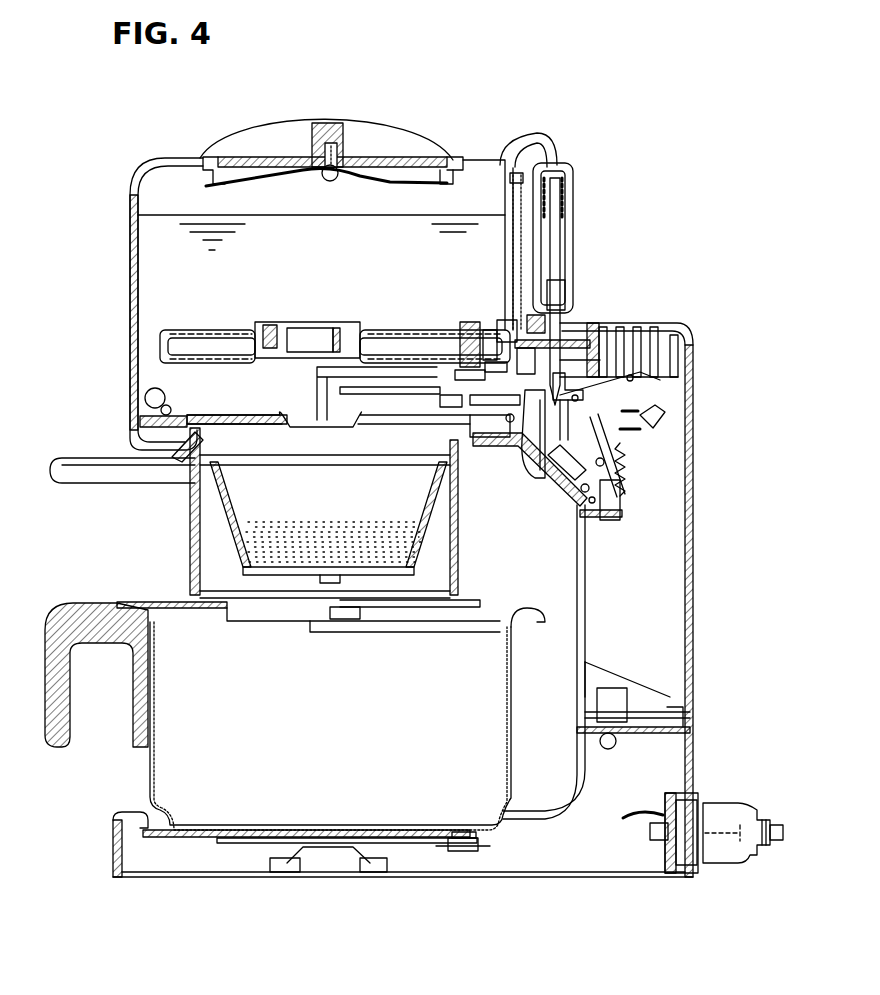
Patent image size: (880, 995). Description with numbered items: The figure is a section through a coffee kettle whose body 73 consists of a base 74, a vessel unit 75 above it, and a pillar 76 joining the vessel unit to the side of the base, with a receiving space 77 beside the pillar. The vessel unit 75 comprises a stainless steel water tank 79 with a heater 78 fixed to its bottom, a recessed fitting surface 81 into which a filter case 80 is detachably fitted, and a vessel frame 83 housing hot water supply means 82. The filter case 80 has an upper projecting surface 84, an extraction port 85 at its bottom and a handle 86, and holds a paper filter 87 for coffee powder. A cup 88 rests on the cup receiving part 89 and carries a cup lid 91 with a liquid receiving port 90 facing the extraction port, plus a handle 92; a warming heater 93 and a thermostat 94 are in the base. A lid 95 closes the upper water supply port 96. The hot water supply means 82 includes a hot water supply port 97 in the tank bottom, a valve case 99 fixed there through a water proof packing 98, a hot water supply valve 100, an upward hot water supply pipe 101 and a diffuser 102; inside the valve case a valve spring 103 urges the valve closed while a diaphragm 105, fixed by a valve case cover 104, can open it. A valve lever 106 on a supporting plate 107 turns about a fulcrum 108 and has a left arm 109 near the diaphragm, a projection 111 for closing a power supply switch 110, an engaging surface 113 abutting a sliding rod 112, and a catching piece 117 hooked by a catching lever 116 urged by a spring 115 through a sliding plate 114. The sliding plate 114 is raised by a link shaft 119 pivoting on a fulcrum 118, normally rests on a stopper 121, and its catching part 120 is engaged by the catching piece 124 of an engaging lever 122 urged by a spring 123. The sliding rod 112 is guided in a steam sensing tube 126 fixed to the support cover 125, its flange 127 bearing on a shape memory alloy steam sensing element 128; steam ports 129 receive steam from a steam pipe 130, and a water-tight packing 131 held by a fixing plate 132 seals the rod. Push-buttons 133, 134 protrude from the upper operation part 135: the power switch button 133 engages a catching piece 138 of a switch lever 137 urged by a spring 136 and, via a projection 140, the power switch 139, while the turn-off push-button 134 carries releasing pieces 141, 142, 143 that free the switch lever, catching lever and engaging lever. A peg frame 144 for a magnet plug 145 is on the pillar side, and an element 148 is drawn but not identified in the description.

The body of the kettle 73 is at (698, 612).
The base 74 is at (118, 842).
The vessel unit 75 is at (130, 334).
The pillar 76 is at (693, 650).
The receiving space 77 is at (160, 587).
The heater 78 is at (160, 333).
The water tank 79 is at (131, 252).
The filter case 80 is at (193, 526).
The recessed fitting surface 81 is at (273, 407).
The hot water supply means 82 is at (307, 333).
The vessel frame 83 is at (137, 419).
The upper projecting surface 84 is at (186, 454).
The extraction port 85 is at (243, 572).
The handle 86 is at (58, 458).
The paper filter 87 is at (212, 482).
The cup 88 is at (163, 772).
The cup receiving part 89 is at (157, 836).
The liquid receiving port 90 is at (313, 633).
The cup lid 91 is at (230, 613).
The handle 92 is at (73, 692).
The warming heater 93 is at (227, 845).
The thermostat 94 is at (467, 852).
The lid of the water tank 95 is at (262, 142).
The upper water supply port 96 is at (248, 193).
The hot water supply port 97 is at (452, 335).
The water proof packing 98 is at (490, 355).
The valve case 99 is at (478, 345).
The hot water supply valve 100 is at (440, 330).
The hot water supply pipe 101 is at (310, 380).
The dish 102 is at (313, 387).
The valve spring 103 is at (465, 345).
The valve case cover 104 is at (370, 380).
The diaphragm 105 is at (410, 330).
The valve lever 106 is at (500, 453).
The supporting plate 107 is at (522, 457).
The fulcrum 108 is at (517, 450).
The left arm 109 is at (480, 447).
The power supply switch 110 is at (505, 330).
The projection 111 is at (530, 443).
The sliding rod 112 is at (558, 248).
The engaging surface 113 is at (538, 463).
The sliding plate 114 is at (598, 488).
The spring 115 is at (583, 522).
The catching lever 116 is at (588, 504).
The catching piece 117 is at (596, 498).
The fulcrum 118 is at (645, 448).
The link shaft 119 is at (640, 386).
The catching part 120 is at (612, 462).
The stopper 121 is at (625, 452).
The engaging lever 122 is at (575, 345).
The spring 123 is at (595, 345).
The catching piece 124 is at (612, 345).
The support cover 125 is at (660, 345).
The steam sensing tube 126 is at (568, 226).
The flange 127 is at (568, 202).
The steam sensing element 128 is at (568, 182).
The steam ports 129 is at (573, 190).
The steam pipe 130 is at (550, 132).
The water-tight packing 131 is at (570, 305).
The fixing plate 132 is at (516, 345).
The power switch button 133 is at (683, 324).
The turn-off push-button 134 is at (630, 345).
The upper operation part 135 is at (660, 335).
The spring 136 is at (606, 477).
The switch lever 137 is at (640, 397).
The catching piece 138 is at (642, 428).
The power switch 139 is at (650, 436).
The projection 140 is at (640, 410).
The releasing piece 141 is at (650, 374).
The releasing piece 142 is at (655, 360).
The releasing piece 143 is at (647, 330).
The peg frame 144 is at (685, 877).
The magnet plug 145 is at (720, 862).
The water level 148 is at (257, 323).